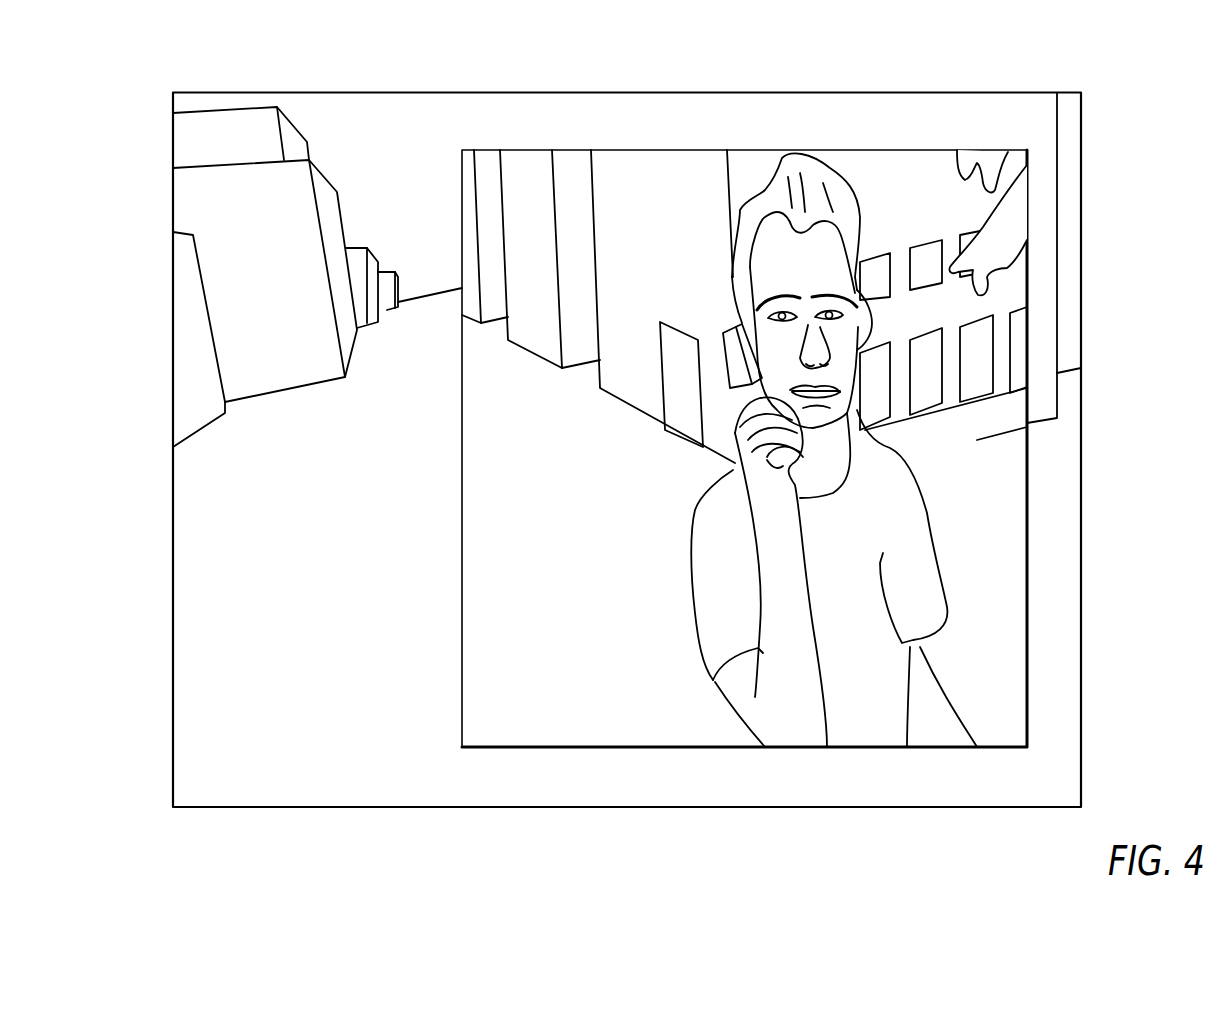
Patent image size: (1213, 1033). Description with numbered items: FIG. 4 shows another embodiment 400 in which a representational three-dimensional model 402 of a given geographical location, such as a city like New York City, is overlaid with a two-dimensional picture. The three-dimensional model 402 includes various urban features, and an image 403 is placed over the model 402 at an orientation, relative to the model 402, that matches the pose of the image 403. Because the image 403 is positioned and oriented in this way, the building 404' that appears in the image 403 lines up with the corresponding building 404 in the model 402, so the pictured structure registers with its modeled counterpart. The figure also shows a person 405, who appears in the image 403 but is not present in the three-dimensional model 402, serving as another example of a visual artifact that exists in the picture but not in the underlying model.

The embodiment 400 is at (975, 68).
The three-dimensional (3D) model 402 is at (203, 198).
The image 403 is at (561, 665).
The building 404 is at (924, 232).
The building 404' is at (744, 250).
The person 405 is at (850, 720).